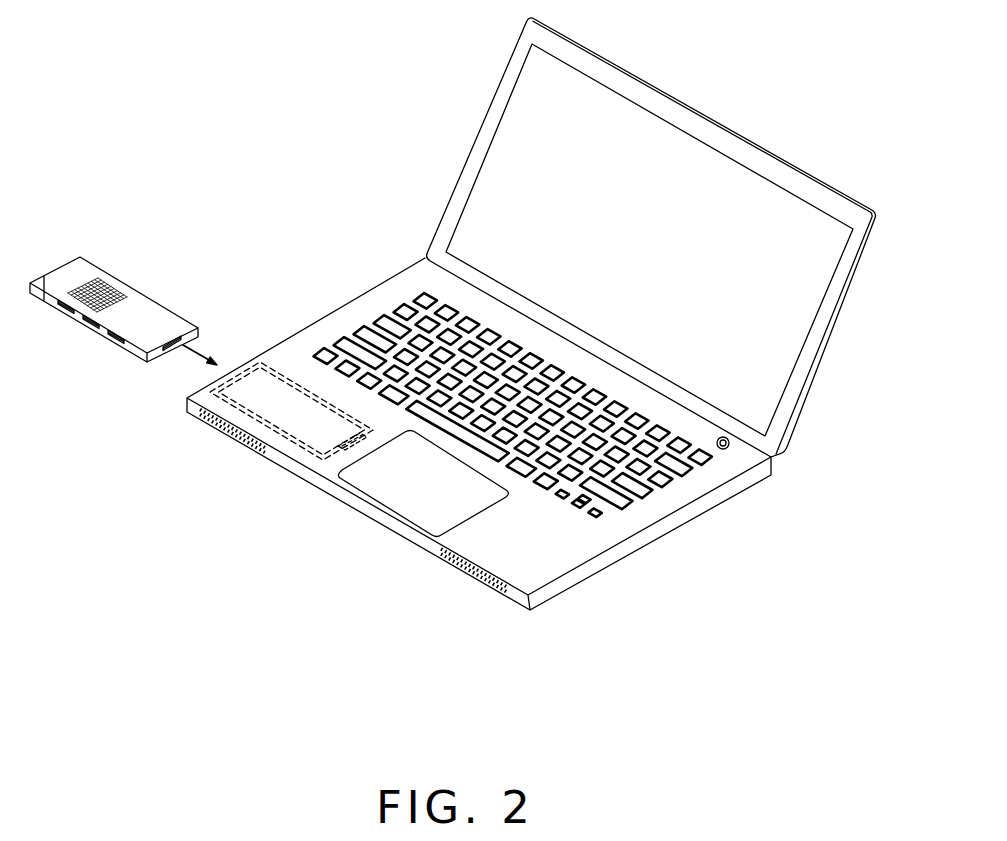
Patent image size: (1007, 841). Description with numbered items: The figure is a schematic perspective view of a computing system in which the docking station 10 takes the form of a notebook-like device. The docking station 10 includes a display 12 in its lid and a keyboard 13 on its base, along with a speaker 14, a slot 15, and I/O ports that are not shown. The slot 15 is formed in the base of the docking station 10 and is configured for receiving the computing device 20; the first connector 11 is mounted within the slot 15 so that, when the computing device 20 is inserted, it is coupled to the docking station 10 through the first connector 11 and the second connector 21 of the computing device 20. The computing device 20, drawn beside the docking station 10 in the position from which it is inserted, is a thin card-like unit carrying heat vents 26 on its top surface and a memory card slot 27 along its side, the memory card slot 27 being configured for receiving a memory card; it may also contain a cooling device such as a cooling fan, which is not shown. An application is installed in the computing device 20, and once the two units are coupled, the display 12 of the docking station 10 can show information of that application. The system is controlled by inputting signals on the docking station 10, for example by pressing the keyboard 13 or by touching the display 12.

The docking station 10 is at (496, 320).
The first connector 11 is at (303, 450).
The display 12 is at (650, 93).
The keyboard 13 is at (640, 488).
The speaker 14 is at (448, 563).
The slot 15 is at (207, 377).
The computing device 20 is at (149, 307).
The second connector 21 is at (183, 338).
The heat vents 26 is at (108, 292).
The memory card slot 27 is at (125, 345).